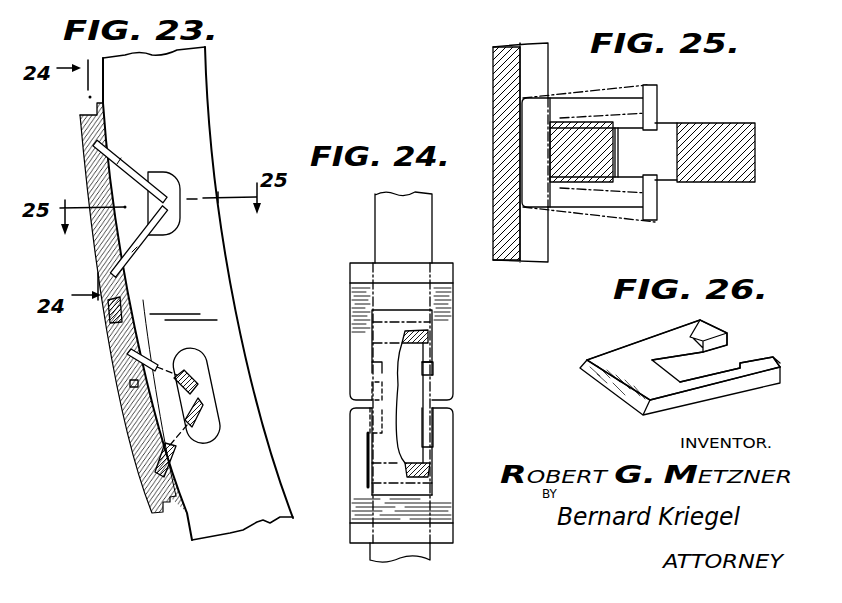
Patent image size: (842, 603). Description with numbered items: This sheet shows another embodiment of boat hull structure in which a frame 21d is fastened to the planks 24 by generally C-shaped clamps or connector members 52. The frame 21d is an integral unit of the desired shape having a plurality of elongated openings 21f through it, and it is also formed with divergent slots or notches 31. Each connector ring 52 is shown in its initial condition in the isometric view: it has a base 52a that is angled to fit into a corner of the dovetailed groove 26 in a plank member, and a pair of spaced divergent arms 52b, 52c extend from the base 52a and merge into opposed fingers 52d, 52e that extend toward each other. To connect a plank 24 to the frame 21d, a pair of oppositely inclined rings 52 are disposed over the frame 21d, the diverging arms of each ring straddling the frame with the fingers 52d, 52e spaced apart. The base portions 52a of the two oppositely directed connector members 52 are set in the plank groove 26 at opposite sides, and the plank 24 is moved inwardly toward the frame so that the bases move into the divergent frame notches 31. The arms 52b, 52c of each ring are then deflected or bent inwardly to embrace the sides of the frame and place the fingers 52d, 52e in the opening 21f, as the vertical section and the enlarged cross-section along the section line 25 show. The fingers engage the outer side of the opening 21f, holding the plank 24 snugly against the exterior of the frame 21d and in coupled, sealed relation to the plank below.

In FIG. 23, the frame 21d is at (202, 102).
In FIG. 24, the frame 21d is at (380, 227).
In FIG. 25, the frame 21d is at (733, 177).
In FIG. 23, the elongated openings 21f is at (182, 222).
In FIG. 24, the elongated openings 21f is at (413, 348).
In FIG. 25, the elongated openings 21f is at (673, 127).
In FIG. 23, the planks 24 is at (81, 145).
In FIG. 25, the planks 24 is at (497, 97).
In FIG. 23, the block 25 is at (108, 316).
In FIG. 23, the dovetailed groove 26 is at (130, 384).
In FIG. 23, the frame slots or notches 31 is at (147, 358).
In FIG. 23, the connector member 52 is at (131, 163).
In FIG. 24, the connector member 52 is at (460, 333).
In FIG. 25, the connector member 52 is at (574, 213).
In FIG. 26, the connector member 52 is at (588, 346).
In FIG. 23, the base 52a is at (158, 462).
In FIG. 24, the base 52a is at (408, 513).
In FIG. 25, the base 52a is at (527, 170).
In FIG. 26, the base 52a is at (620, 378).
In FIG. 24, the arm 52b is at (360, 453).
In FIG. 25, the arm 52b is at (575, 110).
In FIG. 26, the arm 52b is at (667, 333).
In FIG. 24, the arm 52c is at (451, 323).
In FIG. 25, the arm 52c is at (607, 199).
In FIG. 26, the arm 52c is at (727, 384).
In FIG. 23, the finger 52d is at (200, 368).
In FIG. 24, the finger 52d is at (380, 390).
In FIG. 25, the finger 52d is at (627, 123).
In FIG. 26, the finger 52d is at (713, 328).
In FIG. 24, the finger 52e is at (428, 390).
In FIG. 25, the finger 52e is at (643, 187).
In FIG. 26, the finger 52e is at (767, 360).